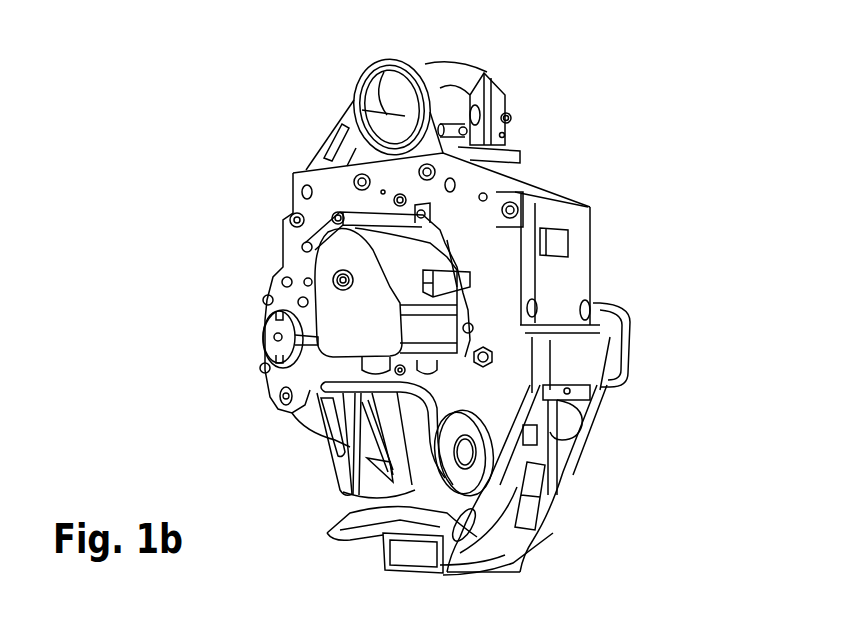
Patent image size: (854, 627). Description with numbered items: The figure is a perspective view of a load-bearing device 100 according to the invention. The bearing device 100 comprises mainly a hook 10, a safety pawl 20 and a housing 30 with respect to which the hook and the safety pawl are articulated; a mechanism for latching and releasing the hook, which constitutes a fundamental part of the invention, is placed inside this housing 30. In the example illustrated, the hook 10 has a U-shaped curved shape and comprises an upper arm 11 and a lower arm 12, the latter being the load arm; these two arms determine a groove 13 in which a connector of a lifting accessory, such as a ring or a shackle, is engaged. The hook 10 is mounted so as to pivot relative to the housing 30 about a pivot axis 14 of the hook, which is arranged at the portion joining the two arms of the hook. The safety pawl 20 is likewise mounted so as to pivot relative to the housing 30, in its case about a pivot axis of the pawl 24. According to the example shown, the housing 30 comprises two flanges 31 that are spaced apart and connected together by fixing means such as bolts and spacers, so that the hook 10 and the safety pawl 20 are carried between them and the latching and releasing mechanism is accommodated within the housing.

The bearing device 100 is at (132, 182).
The hook 10 is at (517, 542).
The upper arm 11 is at (410, 487).
The lower arm 12 is at (420, 558).
The groove 13 is at (400, 505).
The pivot axis of the hook 14 is at (465, 452).
The safety pawl 20 is at (333, 440).
The pivot axis of the pawl 24 is at (278, 396).
The housing 30 is at (683, 349).
The flanges 31 is at (532, 268).